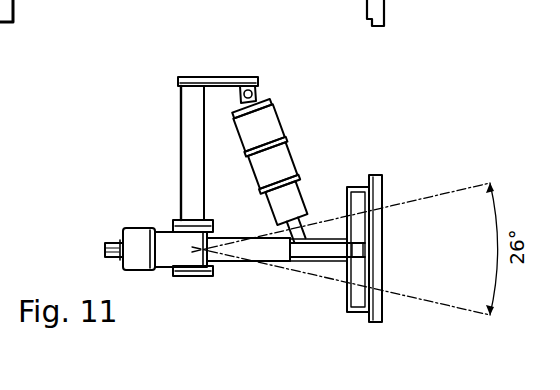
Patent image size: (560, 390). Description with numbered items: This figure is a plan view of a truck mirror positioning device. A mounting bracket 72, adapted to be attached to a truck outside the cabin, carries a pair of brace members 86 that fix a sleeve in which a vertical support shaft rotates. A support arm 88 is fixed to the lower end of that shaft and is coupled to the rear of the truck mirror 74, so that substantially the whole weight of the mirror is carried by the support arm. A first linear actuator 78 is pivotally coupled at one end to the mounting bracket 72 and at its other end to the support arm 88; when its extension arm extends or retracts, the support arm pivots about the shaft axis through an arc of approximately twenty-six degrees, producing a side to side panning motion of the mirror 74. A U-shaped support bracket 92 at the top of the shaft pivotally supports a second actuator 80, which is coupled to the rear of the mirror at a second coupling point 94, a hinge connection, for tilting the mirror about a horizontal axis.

The mounting bracket 72 is at (207, 77).
The truck mirror 74 is at (383, 288).
The first actuator 78 is at (292, 143).
The second actuator 80 is at (212, 267).
The brace members 86 is at (181, 140).
The support arm 88 is at (258, 91).
The U-shaped support bracket 92 is at (182, 276).
The second coupling point 94 is at (357, 233).